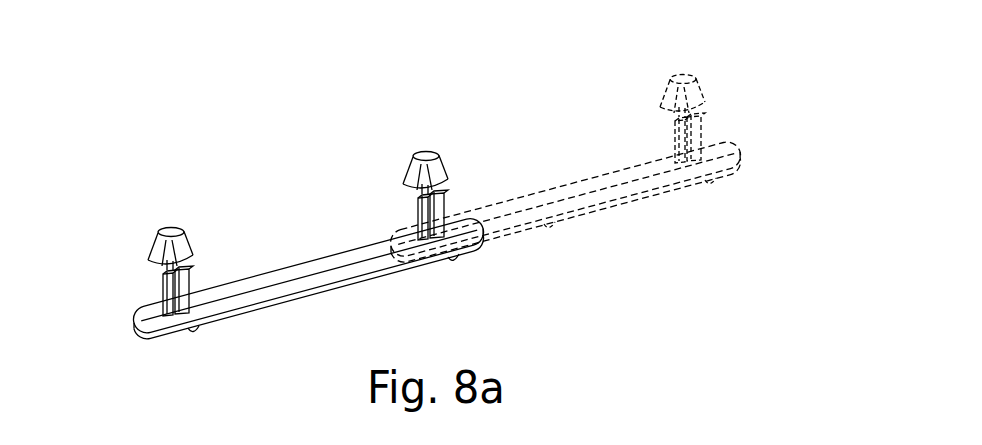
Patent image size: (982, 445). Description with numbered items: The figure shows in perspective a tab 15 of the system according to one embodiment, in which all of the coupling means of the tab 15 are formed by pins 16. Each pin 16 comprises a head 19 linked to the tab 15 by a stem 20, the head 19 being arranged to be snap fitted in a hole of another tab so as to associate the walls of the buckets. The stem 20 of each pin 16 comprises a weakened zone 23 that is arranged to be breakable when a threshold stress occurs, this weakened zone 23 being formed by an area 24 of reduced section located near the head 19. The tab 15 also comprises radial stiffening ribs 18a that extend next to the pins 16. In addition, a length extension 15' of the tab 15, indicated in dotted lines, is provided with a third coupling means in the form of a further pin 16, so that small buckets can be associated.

The tab 15 is at (308, 227).
The length extension 15' is at (565, 233).
The pin 16 is at (432, 141).
The head 19 is at (158, 243).
The stem 20 is at (195, 286).
The weakened zone 23 is at (434, 204).
The area of reduced section 24 is at (158, 272).
The radial stiffening rib 18a is at (197, 332).